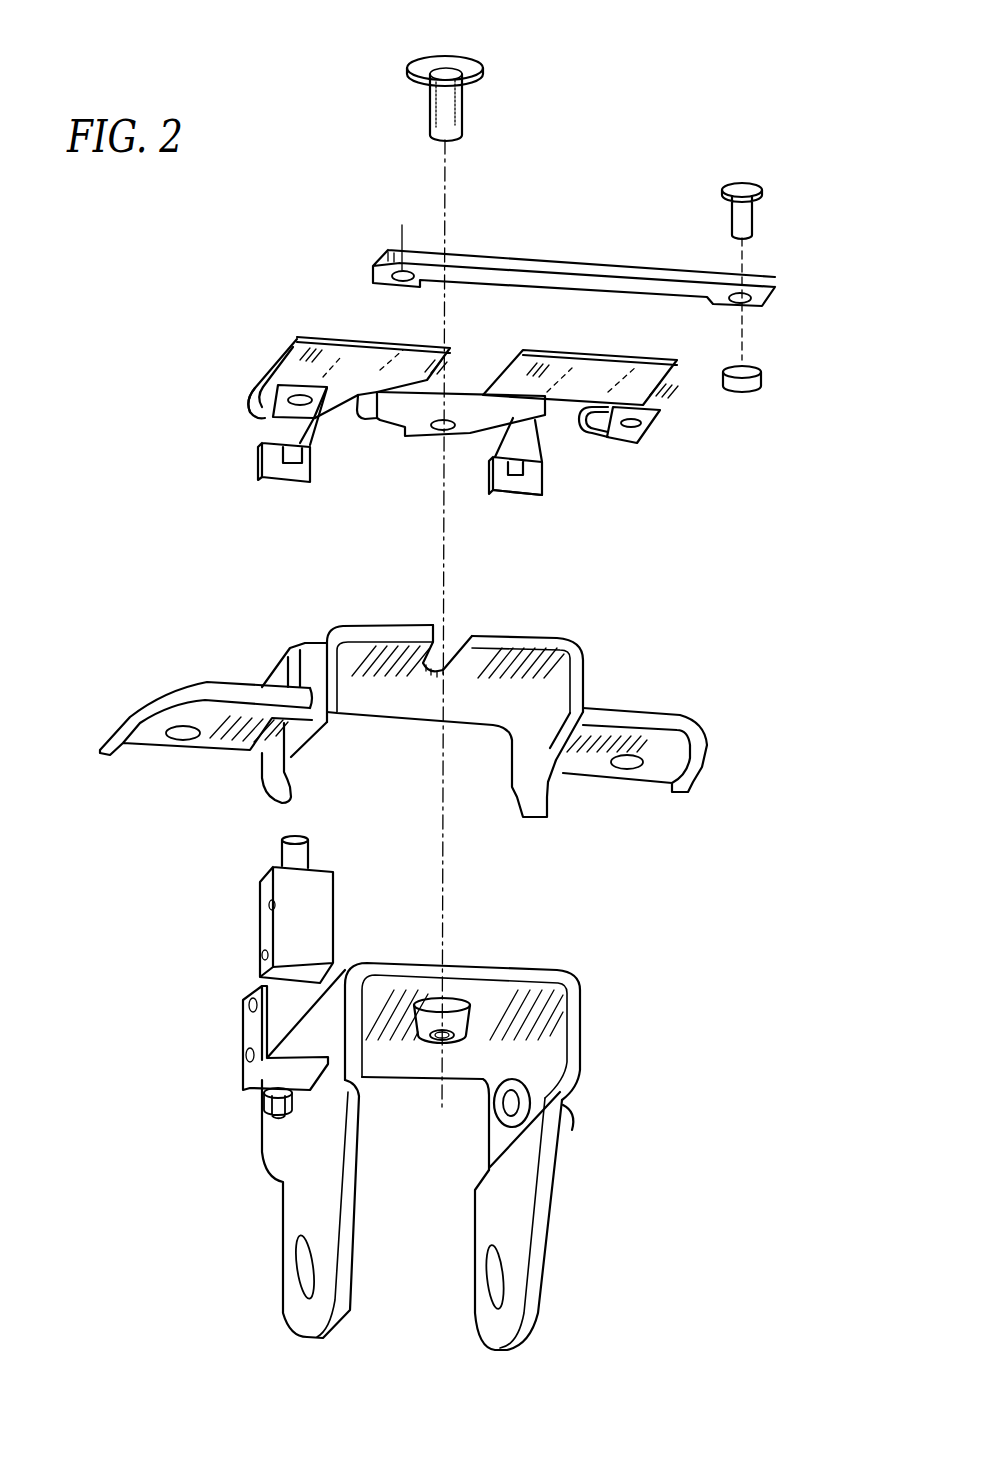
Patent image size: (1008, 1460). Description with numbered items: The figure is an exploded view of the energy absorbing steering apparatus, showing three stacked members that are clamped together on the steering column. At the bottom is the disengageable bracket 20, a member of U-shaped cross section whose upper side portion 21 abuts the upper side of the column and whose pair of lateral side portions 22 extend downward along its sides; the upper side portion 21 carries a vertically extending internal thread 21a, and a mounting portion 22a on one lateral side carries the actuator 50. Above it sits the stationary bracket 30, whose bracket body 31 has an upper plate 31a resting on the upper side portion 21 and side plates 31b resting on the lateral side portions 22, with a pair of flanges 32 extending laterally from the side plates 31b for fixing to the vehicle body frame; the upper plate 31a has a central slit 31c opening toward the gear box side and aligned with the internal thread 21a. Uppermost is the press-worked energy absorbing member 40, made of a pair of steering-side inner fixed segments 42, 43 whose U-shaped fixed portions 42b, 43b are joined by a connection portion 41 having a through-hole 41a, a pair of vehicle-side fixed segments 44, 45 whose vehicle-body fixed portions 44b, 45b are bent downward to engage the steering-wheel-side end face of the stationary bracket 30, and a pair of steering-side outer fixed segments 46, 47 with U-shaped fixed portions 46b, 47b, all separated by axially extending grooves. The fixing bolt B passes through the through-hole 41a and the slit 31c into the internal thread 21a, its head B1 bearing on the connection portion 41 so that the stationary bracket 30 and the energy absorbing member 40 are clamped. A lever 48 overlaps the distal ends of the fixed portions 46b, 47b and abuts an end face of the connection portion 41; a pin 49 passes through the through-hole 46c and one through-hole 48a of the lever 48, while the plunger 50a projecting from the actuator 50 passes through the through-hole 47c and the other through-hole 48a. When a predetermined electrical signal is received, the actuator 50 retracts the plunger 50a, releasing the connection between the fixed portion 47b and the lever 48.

The fixing bolt B is at (451, 75).
The head B1 is at (462, 56).
The pin 49 is at (752, 215).
The lever 48 is at (579, 281).
The through-holes 48a is at (395, 272).
The energy absorbing member 40 is at (255, 369).
The vehicle-side fixed segment 45 is at (363, 363).
The steering-side outer fixed segment 47 is at (283, 345).
The through-hole 47c is at (248, 393).
The fixed portion 47b is at (270, 415).
The vehicle-body fixed portion 45b is at (262, 478).
The steering-side inner fixed segment 43 is at (447, 348).
The fixed portion 43b is at (378, 420).
The connection portion 41 is at (463, 425).
The through-hole 41a is at (440, 437).
The steering-side inner fixed segment 42 is at (537, 355).
The fixed portion 42b is at (518, 470).
The vehicle-side fixed segment 44 is at (560, 422).
The vehicle-body fixed portion 44b is at (543, 478).
The steering-side outer fixed segment 46 is at (648, 360).
The fixed portion 46b is at (615, 443).
The through-hole 46c is at (640, 432).
The stationary bracket 30 is at (716, 776).
The bracket body 31 is at (330, 604).
The upper plate 31a is at (522, 632).
The side plates 31b is at (563, 768).
The slit 31c is at (452, 658).
The flanges 32 is at (212, 720).
The actuator 50 is at (265, 930).
The plunger 50a is at (300, 852).
The disengageable bracket 20 is at (602, 1071).
The upper side portion 21 is at (462, 975).
The internal thread 21a is at (442, 1045).
The lateral side portions 22 is at (307, 1188).
The mounting portion 22a is at (245, 1040).